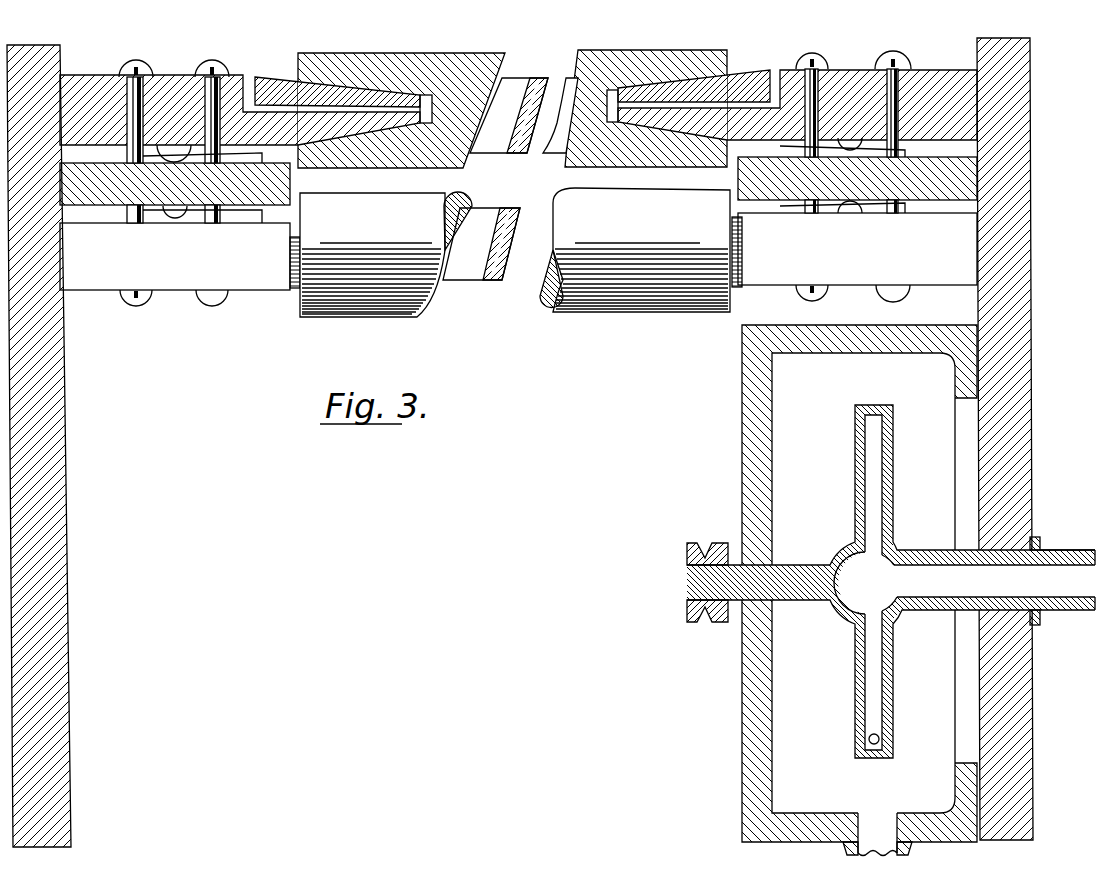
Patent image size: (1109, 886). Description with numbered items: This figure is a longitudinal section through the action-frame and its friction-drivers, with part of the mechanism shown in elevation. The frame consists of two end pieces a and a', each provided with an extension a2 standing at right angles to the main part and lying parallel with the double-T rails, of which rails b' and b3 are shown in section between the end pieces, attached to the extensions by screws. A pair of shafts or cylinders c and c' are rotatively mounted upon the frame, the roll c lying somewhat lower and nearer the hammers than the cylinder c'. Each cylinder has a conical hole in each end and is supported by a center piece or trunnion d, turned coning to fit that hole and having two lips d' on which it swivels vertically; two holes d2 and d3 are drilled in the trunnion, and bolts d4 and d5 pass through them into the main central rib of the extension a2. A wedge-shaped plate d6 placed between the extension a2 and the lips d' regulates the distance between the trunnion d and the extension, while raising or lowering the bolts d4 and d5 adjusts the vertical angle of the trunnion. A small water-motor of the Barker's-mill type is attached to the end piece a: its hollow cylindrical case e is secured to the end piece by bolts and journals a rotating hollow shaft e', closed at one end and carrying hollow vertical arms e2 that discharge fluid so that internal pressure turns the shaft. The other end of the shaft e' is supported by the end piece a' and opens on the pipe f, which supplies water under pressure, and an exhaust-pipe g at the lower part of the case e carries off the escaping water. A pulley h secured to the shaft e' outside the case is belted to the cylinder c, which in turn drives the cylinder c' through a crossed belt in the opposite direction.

The end piece a is at (56, 446).
The end piece a' is at (978, 439).
The extension a2 is at (283, 182).
The center piece or trunnion d is at (518, 163).
The lips or nubs d' is at (512, 88).
The hole d2 is at (144, 90).
The hole d3 is at (222, 88).
The bolt d4 is at (118, 72).
The bolt d5 is at (212, 70).
The wedge-shaped plate d6 is at (248, 212).
The roll or cylinder c is at (515, 252).
The cylinder c' is at (512, 108).
The double-T rail b' is at (509, 115).
The double-T rail b3 is at (481, 244).
The hollow cylindrical case e is at (839, 583).
The rotating hollow shaft e' is at (891, 581).
The hollow vertical arm e2 is at (875, 473).
The pipe f is at (1067, 574).
The exhaust-pipe g is at (877, 834).
The pulley h is at (690, 556).